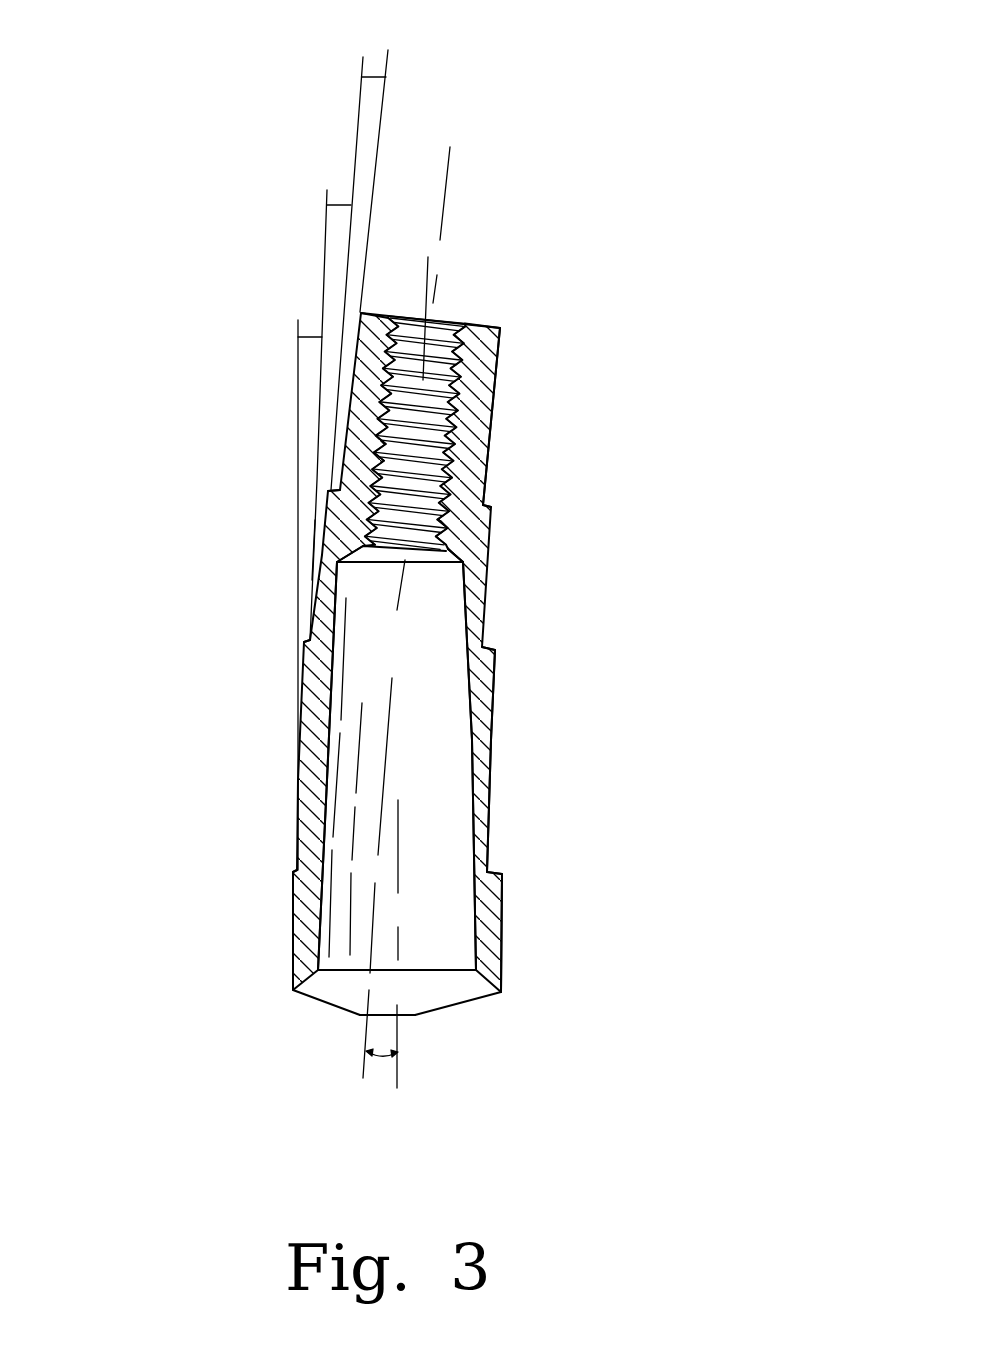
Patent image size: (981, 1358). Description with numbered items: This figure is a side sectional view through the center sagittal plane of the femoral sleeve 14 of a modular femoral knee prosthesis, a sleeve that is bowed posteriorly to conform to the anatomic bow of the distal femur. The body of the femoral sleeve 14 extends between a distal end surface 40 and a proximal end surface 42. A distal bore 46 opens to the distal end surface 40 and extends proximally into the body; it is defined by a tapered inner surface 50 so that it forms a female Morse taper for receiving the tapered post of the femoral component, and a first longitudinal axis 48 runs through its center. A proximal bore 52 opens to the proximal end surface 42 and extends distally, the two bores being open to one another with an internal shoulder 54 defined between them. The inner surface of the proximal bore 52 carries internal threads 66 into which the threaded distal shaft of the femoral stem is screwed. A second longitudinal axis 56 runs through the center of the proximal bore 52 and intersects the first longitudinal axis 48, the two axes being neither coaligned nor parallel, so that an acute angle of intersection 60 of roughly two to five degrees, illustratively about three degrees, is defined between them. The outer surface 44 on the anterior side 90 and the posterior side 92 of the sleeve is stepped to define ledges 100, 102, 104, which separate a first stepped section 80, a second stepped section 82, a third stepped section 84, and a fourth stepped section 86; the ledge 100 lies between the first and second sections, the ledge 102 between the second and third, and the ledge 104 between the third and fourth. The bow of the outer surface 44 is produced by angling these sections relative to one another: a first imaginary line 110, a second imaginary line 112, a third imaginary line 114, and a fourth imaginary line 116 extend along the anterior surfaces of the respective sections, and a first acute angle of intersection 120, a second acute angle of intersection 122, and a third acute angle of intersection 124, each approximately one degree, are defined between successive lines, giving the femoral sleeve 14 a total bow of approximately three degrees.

The femoral sleeve 14 is at (613, 391).
The distal end surface 40 is at (415, 1017).
The proximal end surface 42 is at (490, 327).
The outer surface 44 is at (487, 582).
The distal bore 46 is at (444, 917).
The first longitudinal axis 48 is at (398, 1065).
The tapered inner surface 50 is at (466, 767).
The proximal bore 52 is at (447, 330).
The internal shoulder 54 is at (455, 525).
The second longitudinal axis 56 is at (450, 180).
The acute angle of intersection 60 is at (385, 1060).
The internal threads 66 is at (416, 335).
The first stepped section 80 is at (503, 940).
The second stepped section 82 is at (493, 683).
The third stepped section 84 is at (493, 558).
The fourth stepped section 86 is at (480, 434).
The anterior side 90 is at (183, 581).
The posterior side 92 is at (668, 590).
The ledge 100 is at (296, 868).
The ledge 102 is at (314, 638).
The ledge 104 is at (332, 490).
The first imaginary line 110 is at (300, 740).
The second imaginary line 112 is at (320, 548).
The third imaginary line 114 is at (323, 382).
The fourth imaginary line 116 is at (384, 104).
The first acute angle of intersection 120 is at (313, 330).
The second acute angle of intersection 122 is at (338, 200).
The third acute angle of intersection 124 is at (378, 73).